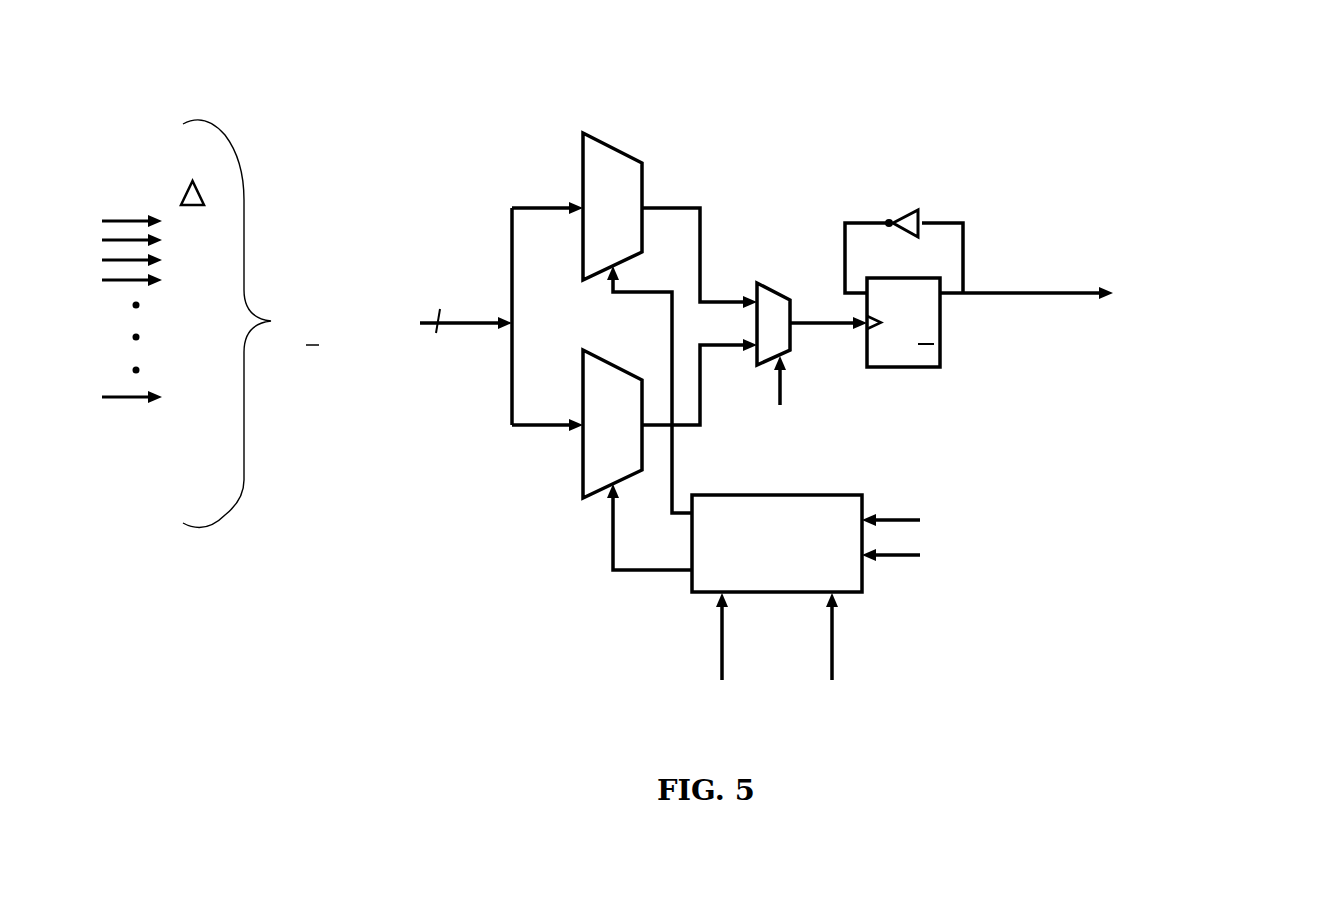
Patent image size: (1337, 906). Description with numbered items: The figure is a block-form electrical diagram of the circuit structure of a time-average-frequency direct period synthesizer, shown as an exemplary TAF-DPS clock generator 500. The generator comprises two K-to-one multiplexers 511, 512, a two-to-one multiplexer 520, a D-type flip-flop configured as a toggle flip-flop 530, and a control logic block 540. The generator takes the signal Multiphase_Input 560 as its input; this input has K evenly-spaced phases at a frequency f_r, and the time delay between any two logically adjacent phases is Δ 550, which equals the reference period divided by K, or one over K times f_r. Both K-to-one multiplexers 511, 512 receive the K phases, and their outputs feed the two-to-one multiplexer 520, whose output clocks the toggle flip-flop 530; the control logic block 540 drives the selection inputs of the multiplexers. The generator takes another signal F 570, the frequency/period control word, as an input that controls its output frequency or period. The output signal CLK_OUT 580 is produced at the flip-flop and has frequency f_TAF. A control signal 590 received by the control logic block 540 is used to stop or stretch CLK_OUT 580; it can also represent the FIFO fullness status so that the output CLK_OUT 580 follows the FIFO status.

The TAF-DPS clock generator 500 is at (812, 354).
The K→1 multiplexer 511 is at (651, 206).
The K→1 multiplexer 512 is at (564, 457).
The 2→1 multiplexer 520 is at (781, 336).
The toggle flip-flop 530 is at (980, 395).
The control logic block 540 is at (844, 518).
The time delay Δ 550 is at (134, 296).
The Multiphase_Input 560 is at (347, 324).
The signal F 570 is at (486, 697).
The output signal CLK_OUT 580 is at (1166, 305).
The control signal 590 is at (970, 687).